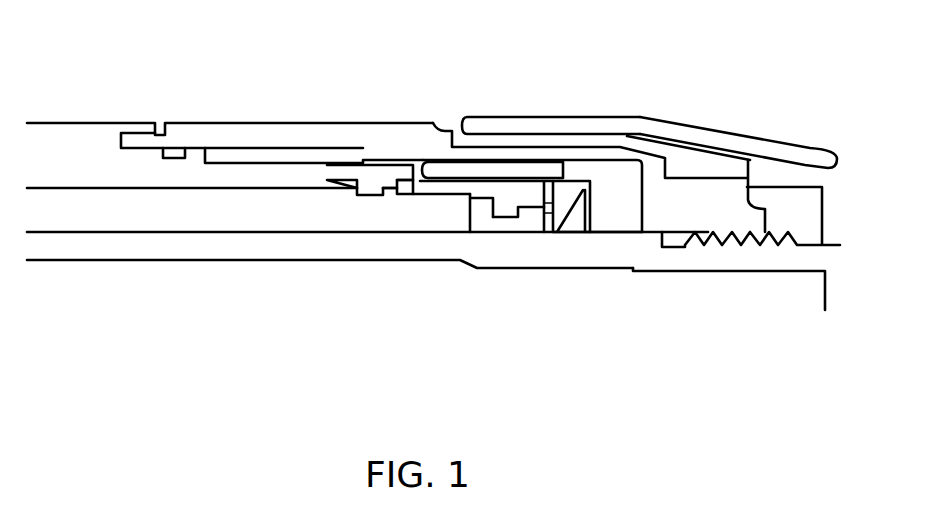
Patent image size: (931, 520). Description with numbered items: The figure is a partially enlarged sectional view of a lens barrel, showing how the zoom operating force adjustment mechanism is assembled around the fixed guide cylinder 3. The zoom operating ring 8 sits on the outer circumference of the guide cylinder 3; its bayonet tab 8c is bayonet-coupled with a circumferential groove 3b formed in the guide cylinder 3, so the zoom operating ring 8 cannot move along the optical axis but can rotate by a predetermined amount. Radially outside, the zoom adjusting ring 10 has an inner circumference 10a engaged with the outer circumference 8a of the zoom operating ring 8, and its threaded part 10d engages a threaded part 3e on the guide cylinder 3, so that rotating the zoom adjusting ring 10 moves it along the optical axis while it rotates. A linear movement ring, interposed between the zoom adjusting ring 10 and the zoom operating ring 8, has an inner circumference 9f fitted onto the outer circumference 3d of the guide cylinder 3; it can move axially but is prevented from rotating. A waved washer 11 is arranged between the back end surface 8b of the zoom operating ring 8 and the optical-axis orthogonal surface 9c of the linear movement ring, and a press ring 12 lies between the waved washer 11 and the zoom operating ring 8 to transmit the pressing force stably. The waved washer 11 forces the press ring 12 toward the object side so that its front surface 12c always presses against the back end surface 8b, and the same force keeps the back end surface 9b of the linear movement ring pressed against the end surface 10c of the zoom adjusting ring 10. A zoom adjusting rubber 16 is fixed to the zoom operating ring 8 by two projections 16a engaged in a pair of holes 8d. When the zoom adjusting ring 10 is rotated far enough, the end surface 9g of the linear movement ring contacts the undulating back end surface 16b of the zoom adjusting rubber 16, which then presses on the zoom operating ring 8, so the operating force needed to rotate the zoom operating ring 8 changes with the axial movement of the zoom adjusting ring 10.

The guide cylinder 3 is at (63, 252).
The circumferential groove 3b is at (492, 235).
The outer circumference 3d is at (672, 205).
The threaded part 3e is at (735, 202).
The zoom operating ring 8 is at (80, 150).
The outer circumference 8a is at (182, 154).
The end surface 8b is at (543, 198).
The bayonet tab 8c is at (462, 238).
The holes 8d is at (363, 193).
The back end surface 9b is at (740, 212).
The optical-axis orthogonal surface 9c is at (585, 180).
The inner circumference 9f is at (607, 236).
The end surface 9g is at (418, 160).
The zoom adjusting ring 10 is at (290, 130).
The inner circumference 10a is at (177, 160).
The end surface 10c is at (625, 140).
The threaded part 10d is at (745, 175).
The waved washer 11 is at (585, 235).
The press ring 12 is at (558, 228).
The front surface 12c is at (545, 205).
The zoom adjusting rubber 16 is at (372, 180).
The projections 16a is at (365, 197).
The back end surface 16b is at (394, 192).